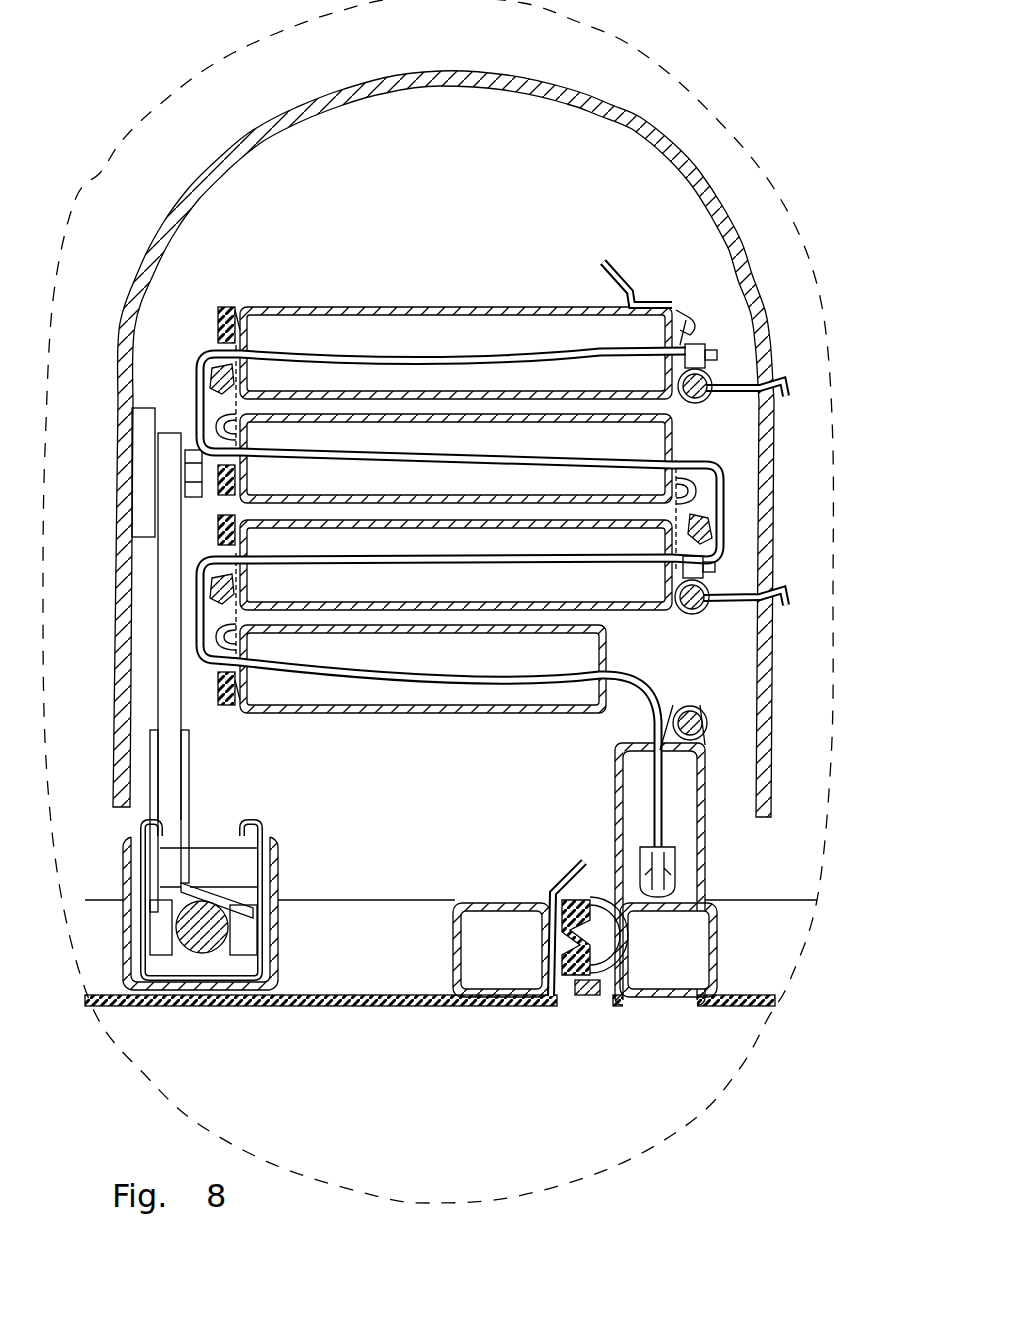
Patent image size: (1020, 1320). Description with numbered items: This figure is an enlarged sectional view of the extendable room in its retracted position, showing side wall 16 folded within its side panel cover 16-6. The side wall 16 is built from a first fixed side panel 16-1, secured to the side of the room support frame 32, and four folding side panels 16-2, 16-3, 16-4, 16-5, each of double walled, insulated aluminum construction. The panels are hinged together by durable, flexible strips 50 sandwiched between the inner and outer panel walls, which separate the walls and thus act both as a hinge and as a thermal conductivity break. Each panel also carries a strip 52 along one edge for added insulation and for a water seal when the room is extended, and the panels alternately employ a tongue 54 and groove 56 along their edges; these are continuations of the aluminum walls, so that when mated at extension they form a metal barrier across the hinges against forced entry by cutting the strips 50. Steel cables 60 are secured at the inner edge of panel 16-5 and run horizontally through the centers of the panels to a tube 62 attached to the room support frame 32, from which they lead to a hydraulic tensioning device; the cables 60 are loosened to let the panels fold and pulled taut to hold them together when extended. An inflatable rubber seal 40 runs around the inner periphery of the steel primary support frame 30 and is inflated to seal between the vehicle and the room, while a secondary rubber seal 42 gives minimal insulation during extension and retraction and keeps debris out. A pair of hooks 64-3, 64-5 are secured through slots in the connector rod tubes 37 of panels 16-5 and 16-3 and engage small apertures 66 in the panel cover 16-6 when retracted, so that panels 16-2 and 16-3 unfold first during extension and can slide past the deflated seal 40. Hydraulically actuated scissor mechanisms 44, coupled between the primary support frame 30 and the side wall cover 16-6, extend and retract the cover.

The side wall 16 is at (452, 214).
The side panel cover 16-6 is at (318, 100).
The folding side panel 16-5 is at (456, 353).
The folding side panel 16-4 is at (456, 458).
The folding side panel 16-3 is at (456, 565).
The folding side panel 16-2 is at (423, 669).
The first fixed side panel 16-1 is at (615, 776).
The steel cables 60 is at (508, 350).
The strip 52 is at (220, 312).
The tongue 54 is at (210, 366).
The flexible strips 50 is at (210, 392).
The groove 56 is at (222, 426).
The apertures 66 is at (765, 368).
The hook 64-5 is at (790, 386).
The hook 64-3 is at (790, 595).
The connector rod tubes 37 is at (704, 396).
The tube 62 is at (676, 868).
The scissor mechanisms 44 is at (190, 790).
The primary support frame 30 is at (453, 970).
The room support frame 32 is at (683, 1004).
The inflatable rubber seal 40 is at (570, 960).
The secondary rubber seal 42 is at (598, 1000).